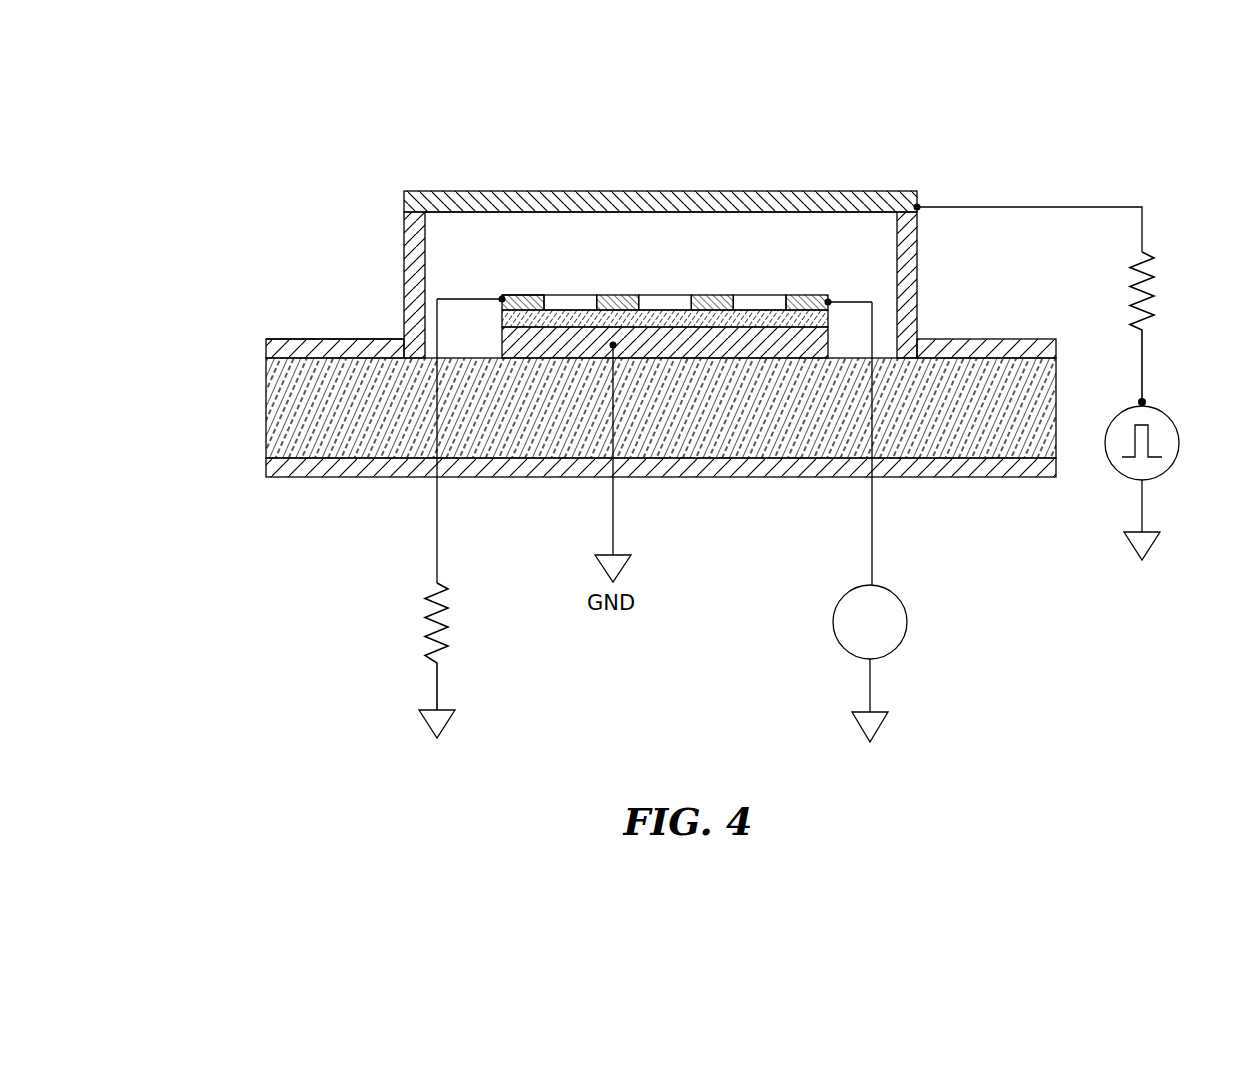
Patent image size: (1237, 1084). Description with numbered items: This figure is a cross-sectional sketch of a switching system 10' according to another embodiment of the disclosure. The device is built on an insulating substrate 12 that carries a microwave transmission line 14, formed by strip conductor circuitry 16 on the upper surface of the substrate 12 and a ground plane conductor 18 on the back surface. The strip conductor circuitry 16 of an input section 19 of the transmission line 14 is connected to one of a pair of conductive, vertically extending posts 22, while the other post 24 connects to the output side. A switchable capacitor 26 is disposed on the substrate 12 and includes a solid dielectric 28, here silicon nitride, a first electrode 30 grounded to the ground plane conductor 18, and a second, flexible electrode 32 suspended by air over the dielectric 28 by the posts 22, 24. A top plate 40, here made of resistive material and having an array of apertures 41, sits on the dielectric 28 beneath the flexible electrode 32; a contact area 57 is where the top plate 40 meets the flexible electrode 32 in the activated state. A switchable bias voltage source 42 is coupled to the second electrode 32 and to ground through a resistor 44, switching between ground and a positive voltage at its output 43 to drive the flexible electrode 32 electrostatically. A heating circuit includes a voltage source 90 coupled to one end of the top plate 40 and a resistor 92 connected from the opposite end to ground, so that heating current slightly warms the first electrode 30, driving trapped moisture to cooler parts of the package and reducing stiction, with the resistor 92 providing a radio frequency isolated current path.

The switching system 10' is at (968, 163).
The insulating substrate 12 is at (266, 412).
The microwave transmission line 14 is at (318, 292).
The strip conductor circuitry 16 is at (266, 343).
The ground plane conductor 18 is at (360, 477).
The input section 19 is at (364, 333).
The conductive vertically extending post 22 is at (404, 231).
The conductive vertically extending post 24 is at (917, 243).
The switchable capacitor 26 is at (523, 191).
The solid dielectric 28 is at (502, 318).
The first electrode 30 is at (502, 346).
The second flexible electrode 32 is at (871, 213).
The top plate 40 is at (532, 295).
The apertures 41 is at (567, 293).
The switchable bias voltage source 42 is at (1179, 444).
The output 43 is at (1147, 401).
The resistor 44 is at (1153, 290).
The contact area 57 is at (506, 290).
The voltage source 90 is at (907, 622).
The resistor 92 is at (425, 629).